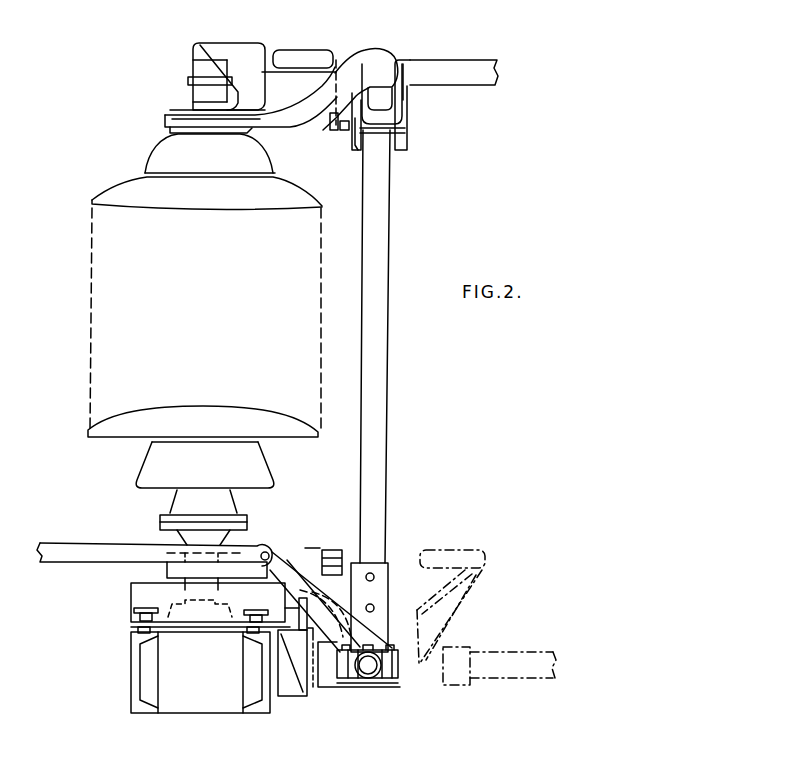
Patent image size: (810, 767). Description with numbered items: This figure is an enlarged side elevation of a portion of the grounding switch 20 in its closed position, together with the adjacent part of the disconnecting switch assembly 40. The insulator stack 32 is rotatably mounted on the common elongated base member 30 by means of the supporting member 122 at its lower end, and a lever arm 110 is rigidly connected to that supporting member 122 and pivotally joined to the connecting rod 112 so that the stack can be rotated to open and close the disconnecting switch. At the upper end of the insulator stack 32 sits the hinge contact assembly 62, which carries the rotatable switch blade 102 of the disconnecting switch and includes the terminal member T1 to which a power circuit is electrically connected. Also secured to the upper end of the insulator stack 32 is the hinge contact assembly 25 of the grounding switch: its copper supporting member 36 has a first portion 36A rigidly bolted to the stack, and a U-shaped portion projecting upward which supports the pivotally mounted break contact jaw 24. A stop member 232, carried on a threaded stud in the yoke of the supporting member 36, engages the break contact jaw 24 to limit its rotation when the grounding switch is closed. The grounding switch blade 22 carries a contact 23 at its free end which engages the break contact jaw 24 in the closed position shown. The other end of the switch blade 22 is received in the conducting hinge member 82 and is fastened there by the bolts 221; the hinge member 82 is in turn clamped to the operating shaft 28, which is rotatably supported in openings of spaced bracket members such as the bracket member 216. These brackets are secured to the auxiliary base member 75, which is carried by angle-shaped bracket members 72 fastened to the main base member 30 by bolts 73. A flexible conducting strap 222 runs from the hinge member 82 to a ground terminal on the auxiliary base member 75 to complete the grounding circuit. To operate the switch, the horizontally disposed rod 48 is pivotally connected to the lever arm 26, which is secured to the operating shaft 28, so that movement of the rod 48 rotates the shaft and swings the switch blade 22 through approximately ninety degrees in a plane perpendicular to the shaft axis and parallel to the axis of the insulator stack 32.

The grounding switch 20 is at (183, 339).
The switch blade 22 is at (387, 219).
The contact 23 is at (401, 148).
The break contact jaw 24 is at (410, 117).
The hinge contact assembly 25 is at (456, 114).
The lever arm 26 is at (288, 566).
The operating shaft 28 is at (375, 685).
The base member 30 is at (117, 658).
The insulator stack 32 is at (95, 289).
The supporting member 36 is at (360, 60).
The first portion 36A is at (291, 124).
The disconnecting switch assembly 40 is at (545, 92).
The rod 48 is at (80, 546).
The hinge contact assembly 62 is at (248, 31).
The bracket member 72 is at (138, 590).
The bolts 73 is at (133, 607).
The auxiliary base member 75 is at (302, 681).
The hinge member 82 is at (388, 567).
The switch blade 102 is at (450, 62).
The lever arm 110 is at (308, 552).
The connecting rod 112 is at (338, 540).
The supporting member 122 is at (163, 630).
The bracket member 216 is at (313, 690).
The bolts 221 is at (375, 577).
The flexible conducting strap 222 is at (301, 608).
The stop member 232 is at (345, 132).
The terminal member T1 is at (187, 80).